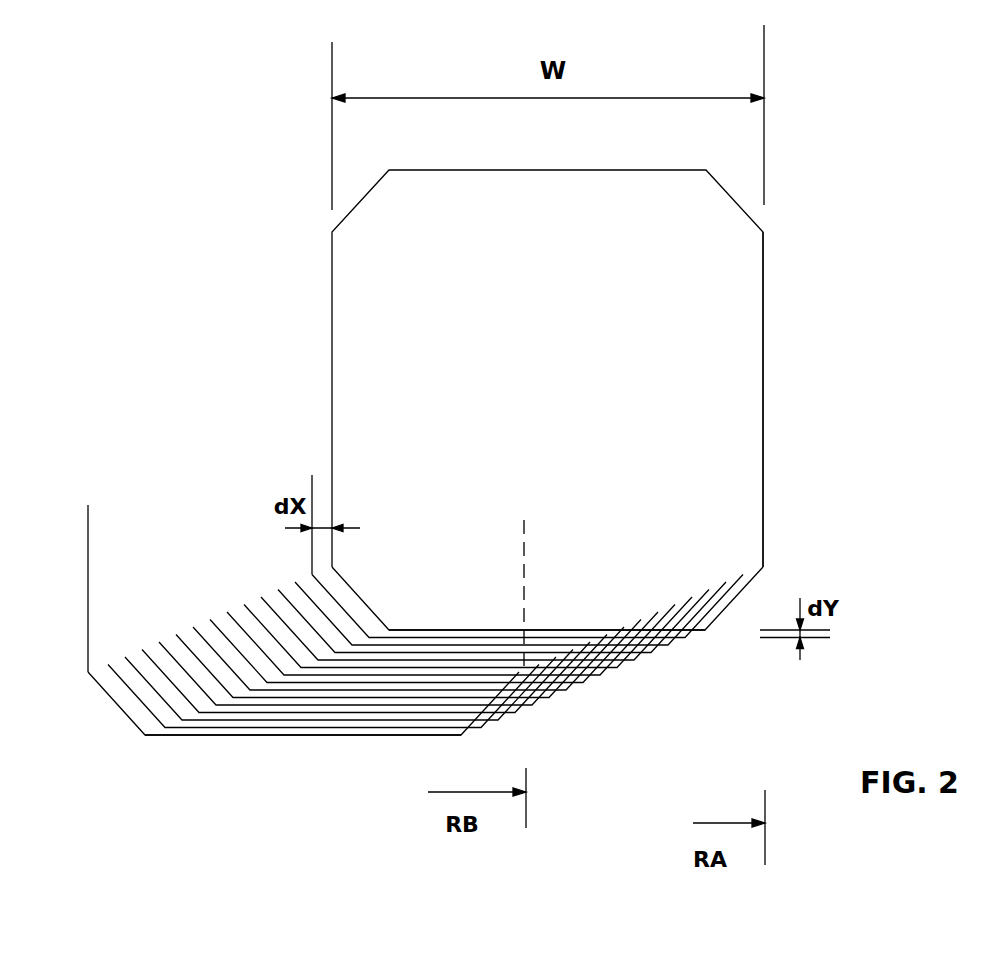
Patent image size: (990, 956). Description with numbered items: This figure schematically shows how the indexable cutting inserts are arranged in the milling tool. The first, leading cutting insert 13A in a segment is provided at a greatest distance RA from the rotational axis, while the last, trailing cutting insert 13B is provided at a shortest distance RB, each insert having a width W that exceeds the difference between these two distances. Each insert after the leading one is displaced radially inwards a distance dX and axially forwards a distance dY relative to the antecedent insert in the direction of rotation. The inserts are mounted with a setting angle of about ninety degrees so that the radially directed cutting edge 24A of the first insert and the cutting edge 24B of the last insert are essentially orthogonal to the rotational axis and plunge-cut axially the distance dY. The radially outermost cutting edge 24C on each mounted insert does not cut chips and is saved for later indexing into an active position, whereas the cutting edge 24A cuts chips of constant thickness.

The first cutting insert 13A is at (735, 362).
The radially outermost cutting edge 24C is at (763, 420).
The radially directed cutting edge 24A is at (530, 630).
The last trailing cutting insert 13B is at (122, 700).
The radially directed cutting edge 24B is at (228, 722).